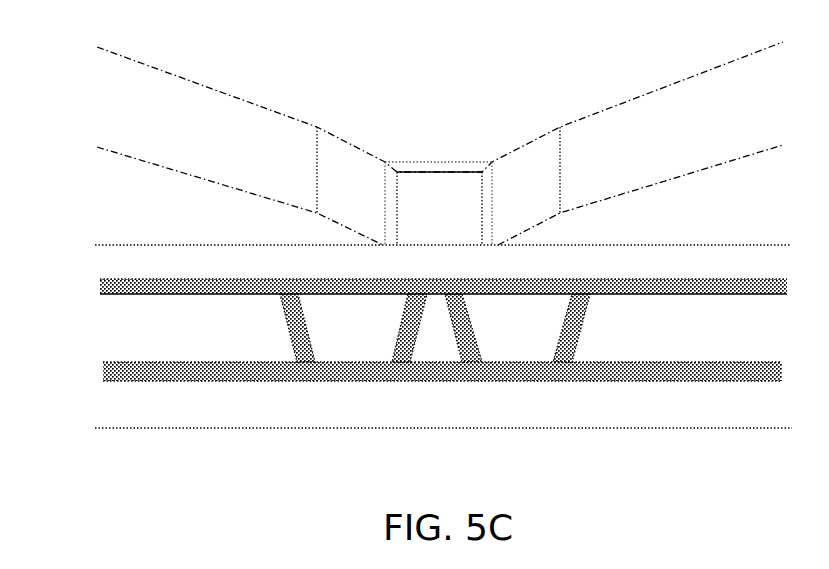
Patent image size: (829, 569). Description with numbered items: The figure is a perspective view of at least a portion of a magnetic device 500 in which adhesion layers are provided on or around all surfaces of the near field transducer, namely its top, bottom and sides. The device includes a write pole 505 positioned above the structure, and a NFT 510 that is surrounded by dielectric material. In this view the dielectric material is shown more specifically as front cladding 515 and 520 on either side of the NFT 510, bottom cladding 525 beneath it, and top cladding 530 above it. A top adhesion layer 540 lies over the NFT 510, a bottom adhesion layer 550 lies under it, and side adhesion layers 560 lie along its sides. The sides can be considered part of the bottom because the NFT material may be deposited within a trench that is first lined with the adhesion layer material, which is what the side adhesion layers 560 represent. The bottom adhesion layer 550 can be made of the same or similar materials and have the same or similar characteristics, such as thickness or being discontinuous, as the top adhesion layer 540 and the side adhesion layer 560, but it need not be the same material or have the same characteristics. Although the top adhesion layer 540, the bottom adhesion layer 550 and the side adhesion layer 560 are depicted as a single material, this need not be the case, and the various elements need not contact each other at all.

The display assembly 500 is at (222, 456).
The write pole 505 is at (93, 238).
The NFT 510 is at (437, 326).
The front cladding 515 is at (686, 330).
The front cladding 520 is at (200, 325).
The bottom cladding 525 is at (626, 403).
The top cladding 530 is at (612, 252).
The top adhesion layer 540 is at (92, 285).
The bottom adhesion layer 550 is at (92, 372).
The side adhesion layer 560 is at (288, 332).